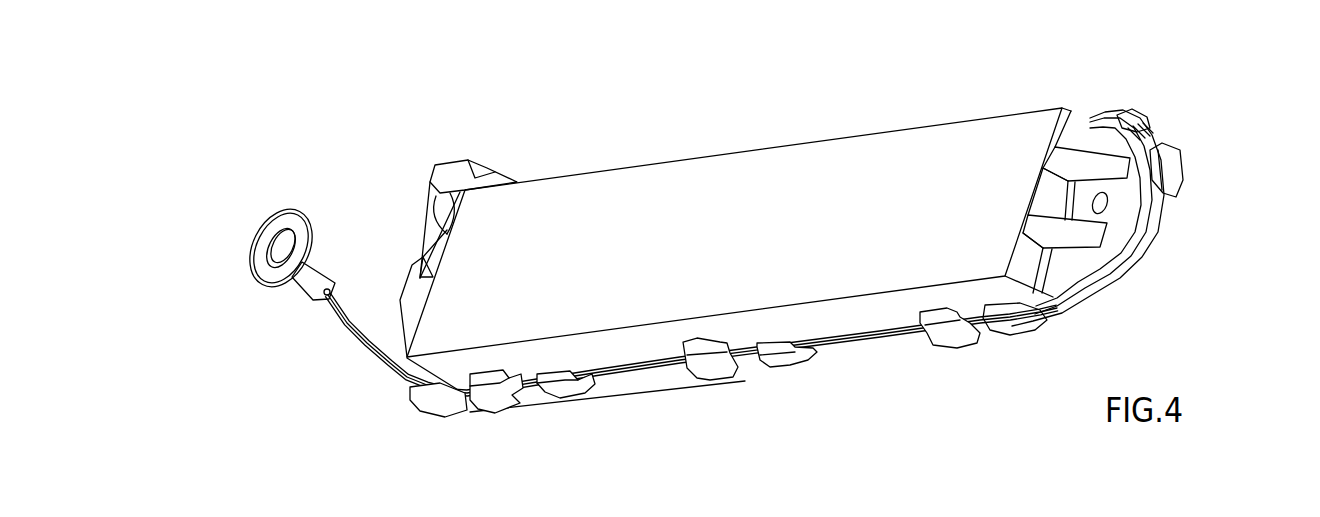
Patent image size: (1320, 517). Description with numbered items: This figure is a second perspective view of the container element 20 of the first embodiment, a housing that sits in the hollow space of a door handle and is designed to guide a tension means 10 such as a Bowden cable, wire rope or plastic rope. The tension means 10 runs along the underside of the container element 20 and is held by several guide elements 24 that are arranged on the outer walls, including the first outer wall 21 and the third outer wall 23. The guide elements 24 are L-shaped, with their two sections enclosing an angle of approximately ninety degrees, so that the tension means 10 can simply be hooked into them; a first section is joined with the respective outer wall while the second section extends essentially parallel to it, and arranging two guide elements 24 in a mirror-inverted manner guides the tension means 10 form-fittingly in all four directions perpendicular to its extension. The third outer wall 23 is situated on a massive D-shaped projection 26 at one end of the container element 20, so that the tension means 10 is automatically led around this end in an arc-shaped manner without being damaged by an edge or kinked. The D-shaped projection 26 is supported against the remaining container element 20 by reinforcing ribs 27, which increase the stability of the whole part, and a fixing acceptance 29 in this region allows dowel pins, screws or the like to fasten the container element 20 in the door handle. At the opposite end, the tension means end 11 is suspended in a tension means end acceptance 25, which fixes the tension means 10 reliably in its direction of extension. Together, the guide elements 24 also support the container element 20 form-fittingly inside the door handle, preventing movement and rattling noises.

The tension means 10 is at (347, 317).
The tension means end 11 is at (437, 213).
The container element 20 is at (641, 193).
The first outer wall 21 is at (637, 383).
The third outer wall 23 is at (1134, 246).
The guide elements 24 is at (452, 408).
The tension means end acceptance 25 is at (424, 310).
The D-shaped projection 26 is at (1145, 132).
The reinforcing ribs 27 is at (1098, 162).
The fixing acceptances 29 is at (1105, 210).